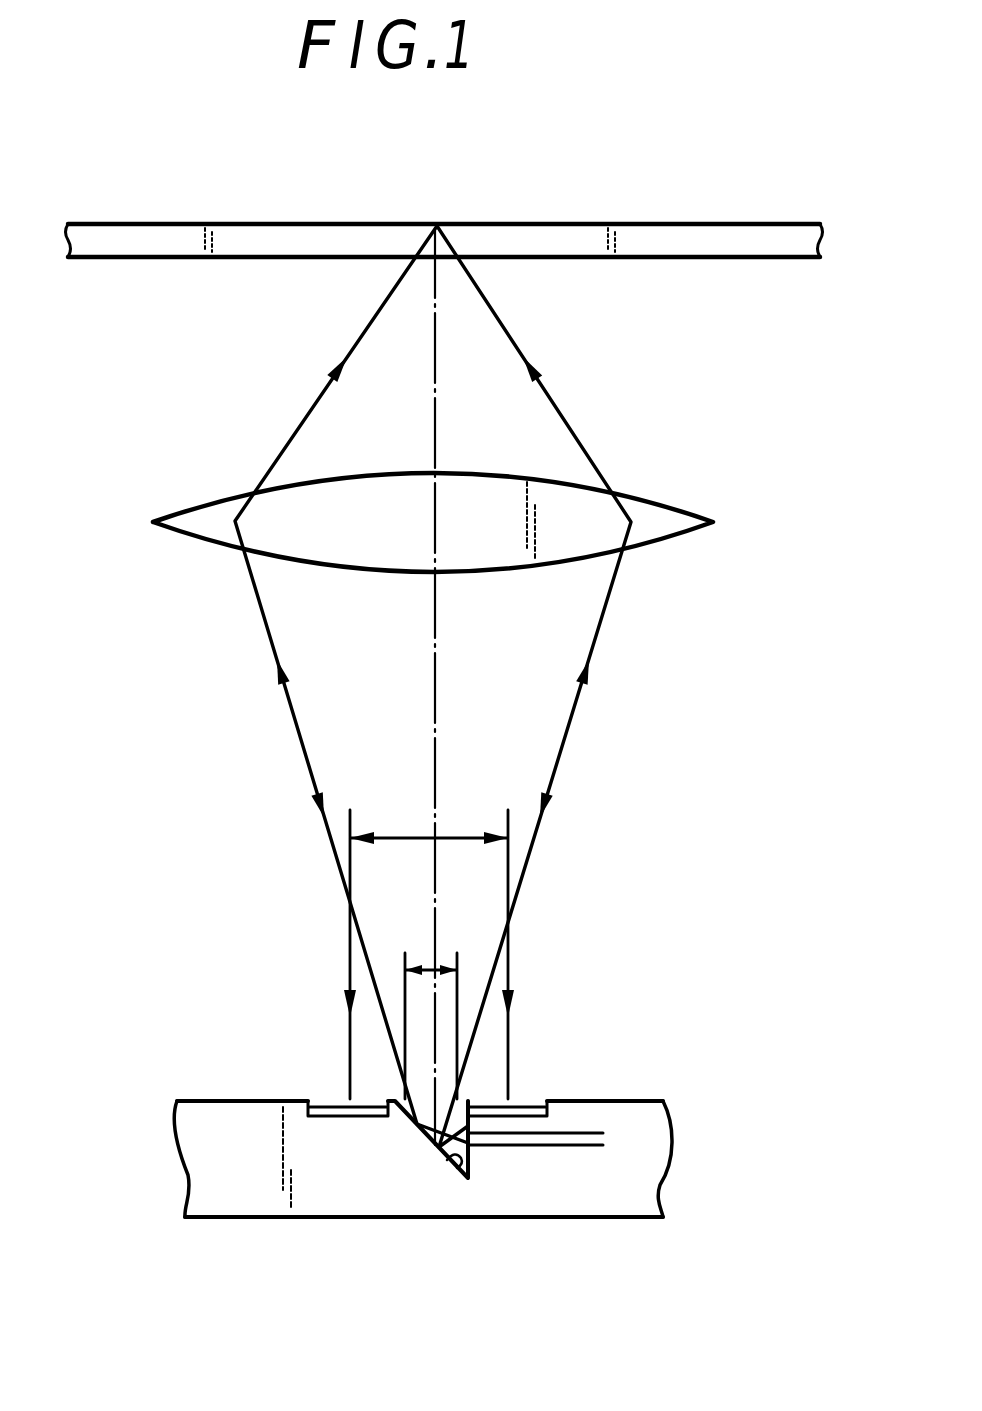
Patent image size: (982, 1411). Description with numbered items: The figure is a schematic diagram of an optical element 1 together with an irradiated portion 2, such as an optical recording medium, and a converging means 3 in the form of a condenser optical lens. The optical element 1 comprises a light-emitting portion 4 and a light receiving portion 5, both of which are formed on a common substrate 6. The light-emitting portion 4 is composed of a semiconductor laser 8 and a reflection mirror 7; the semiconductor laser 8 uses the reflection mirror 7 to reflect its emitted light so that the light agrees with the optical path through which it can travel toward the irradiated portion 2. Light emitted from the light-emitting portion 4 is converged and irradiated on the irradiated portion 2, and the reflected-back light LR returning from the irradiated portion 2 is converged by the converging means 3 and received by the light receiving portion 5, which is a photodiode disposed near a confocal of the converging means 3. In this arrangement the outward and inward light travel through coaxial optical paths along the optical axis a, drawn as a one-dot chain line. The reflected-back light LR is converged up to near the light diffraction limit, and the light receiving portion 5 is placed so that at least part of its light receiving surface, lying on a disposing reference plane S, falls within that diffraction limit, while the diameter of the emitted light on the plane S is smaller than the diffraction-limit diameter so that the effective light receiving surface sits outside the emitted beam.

The optical element 1 is at (235, 1082).
The irradiated portion 2 is at (712, 258).
The converging means 3 is at (648, 492).
The light-emitting portion 4 is at (577, 1281).
The light receiving portion 5 is at (332, 1099).
The common substrate 6 is at (244, 1197).
The reflection mirror 7 is at (455, 1160).
The semiconductor laser 8 is at (568, 1150).
The optical axis a is at (436, 658).
The disposing reference plane S is at (642, 1100).
The reflected-back light LR is at (512, 966).